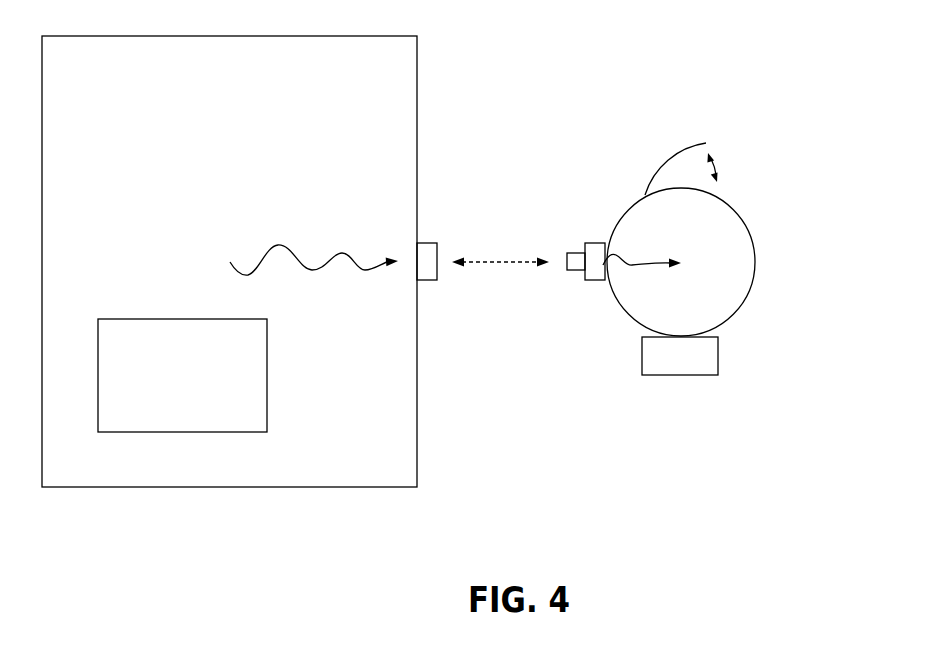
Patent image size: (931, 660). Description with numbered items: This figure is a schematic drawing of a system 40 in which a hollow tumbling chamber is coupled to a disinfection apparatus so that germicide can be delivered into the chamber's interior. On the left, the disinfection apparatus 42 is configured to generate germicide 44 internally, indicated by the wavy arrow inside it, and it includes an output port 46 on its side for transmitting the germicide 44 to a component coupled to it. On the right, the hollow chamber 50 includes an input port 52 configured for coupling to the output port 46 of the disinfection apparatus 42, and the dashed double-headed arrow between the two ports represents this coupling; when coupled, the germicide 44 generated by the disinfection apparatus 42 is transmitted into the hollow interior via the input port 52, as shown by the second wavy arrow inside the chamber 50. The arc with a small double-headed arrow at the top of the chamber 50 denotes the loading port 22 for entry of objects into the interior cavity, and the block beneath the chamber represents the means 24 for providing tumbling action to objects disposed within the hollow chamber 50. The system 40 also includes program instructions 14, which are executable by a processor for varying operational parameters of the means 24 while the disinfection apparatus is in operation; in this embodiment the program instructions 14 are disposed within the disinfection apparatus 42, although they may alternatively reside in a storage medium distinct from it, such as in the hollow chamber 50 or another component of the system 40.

The program instructions 14 is at (182, 375).
The loading port 22 is at (690, 186).
The means for providing tumbling action 24 is at (679, 355).
The system 40 is at (533, 103).
The disinfection apparatus 42 is at (229, 261).
The germicide 44 is at (300, 263).
The output port 46 is at (427, 262).
The hollow chamber 50 is at (743, 218).
The input port 52 is at (575, 262).